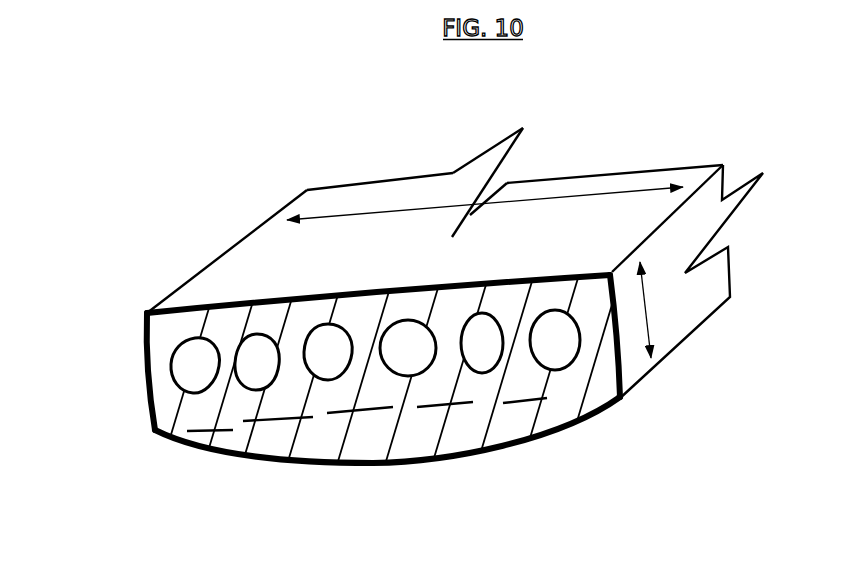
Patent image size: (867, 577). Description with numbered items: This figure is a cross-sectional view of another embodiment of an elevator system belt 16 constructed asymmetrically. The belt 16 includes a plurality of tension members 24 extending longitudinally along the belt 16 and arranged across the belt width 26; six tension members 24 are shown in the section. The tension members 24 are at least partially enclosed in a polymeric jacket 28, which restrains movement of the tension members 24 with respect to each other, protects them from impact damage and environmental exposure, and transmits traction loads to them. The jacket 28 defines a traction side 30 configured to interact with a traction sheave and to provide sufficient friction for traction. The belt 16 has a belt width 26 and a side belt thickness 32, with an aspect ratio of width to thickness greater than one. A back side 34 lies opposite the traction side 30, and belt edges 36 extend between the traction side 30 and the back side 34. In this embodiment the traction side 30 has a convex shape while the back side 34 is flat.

The belt 16 is at (140, 112).
The tension members 24 is at (320, 347).
The belt width 26 is at (385, 208).
The polymeric jacket 28 is at (181, 392).
The traction side 30 is at (388, 468).
The belt thickness 32 is at (643, 312).
The back side 34 is at (548, 272).
The belt edges 36 is at (148, 353).